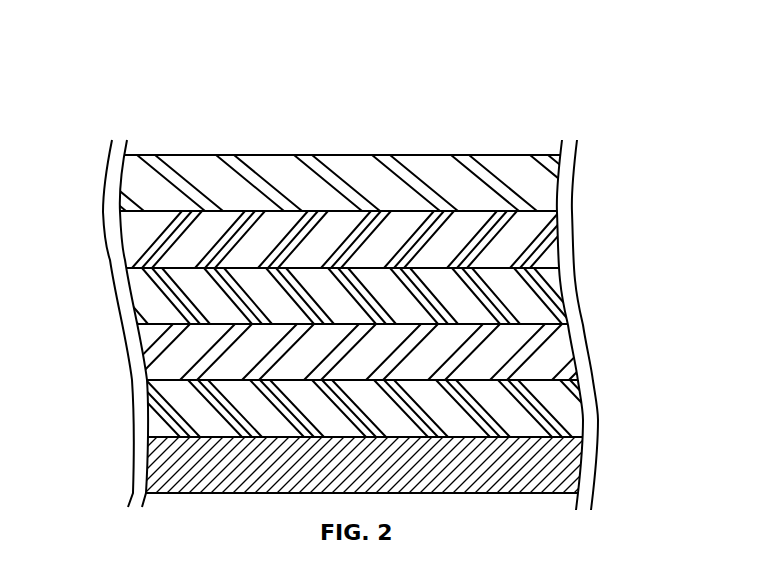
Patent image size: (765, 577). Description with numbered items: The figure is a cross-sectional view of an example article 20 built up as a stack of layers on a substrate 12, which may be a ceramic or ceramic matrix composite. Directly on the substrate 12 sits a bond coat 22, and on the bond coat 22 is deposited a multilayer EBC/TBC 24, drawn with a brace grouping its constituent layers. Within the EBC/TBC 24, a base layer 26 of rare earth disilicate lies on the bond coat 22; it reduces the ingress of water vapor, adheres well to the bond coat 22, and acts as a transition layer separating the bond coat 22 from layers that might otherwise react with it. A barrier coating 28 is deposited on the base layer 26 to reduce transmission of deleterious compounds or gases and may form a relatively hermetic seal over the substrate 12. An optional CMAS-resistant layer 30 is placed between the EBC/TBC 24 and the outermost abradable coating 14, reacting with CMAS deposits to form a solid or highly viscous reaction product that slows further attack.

The article 20 is at (113, 76).
The substrate 12 is at (145, 460).
The abradable coating 14 is at (130, 171).
The bond coat 22 is at (153, 418).
The multilayer EBC/TBC 24 is at (615, 212).
The base layer 26 is at (150, 332).
The barrier coating 28 is at (143, 285).
The CMAS-resistant layer 30 is at (130, 240).